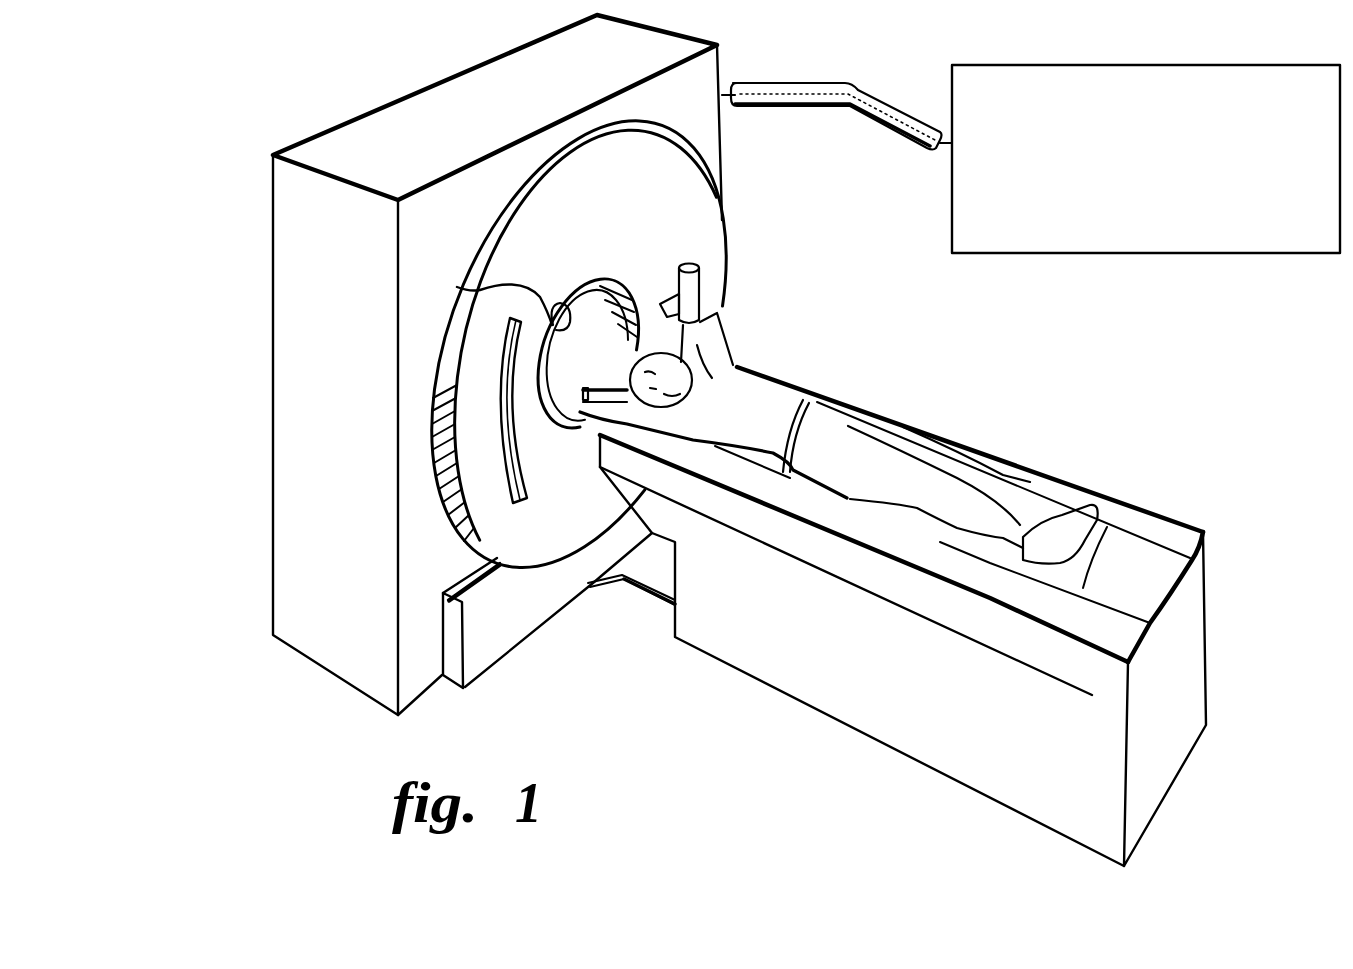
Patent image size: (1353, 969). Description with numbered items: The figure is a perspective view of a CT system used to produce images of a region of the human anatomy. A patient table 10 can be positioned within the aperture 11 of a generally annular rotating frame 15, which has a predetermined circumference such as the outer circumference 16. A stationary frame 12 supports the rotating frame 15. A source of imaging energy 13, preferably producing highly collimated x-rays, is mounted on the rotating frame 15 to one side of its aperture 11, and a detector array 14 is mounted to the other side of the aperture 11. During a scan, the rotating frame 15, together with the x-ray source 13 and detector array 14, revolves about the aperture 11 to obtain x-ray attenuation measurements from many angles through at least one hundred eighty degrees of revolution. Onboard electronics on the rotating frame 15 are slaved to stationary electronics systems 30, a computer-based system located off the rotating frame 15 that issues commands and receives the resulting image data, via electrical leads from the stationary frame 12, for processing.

The patient table 10 is at (773, 663).
The aperture 11 is at (473, 290).
The stationary frame 12 is at (313, 352).
The source of imaging energy 13 is at (700, 286).
The detector array 14 is at (500, 393).
The rotating frame 15 is at (472, 492).
The outer circumference 16 is at (710, 193).
The stationary electronics systems 30 is at (1163, 235).